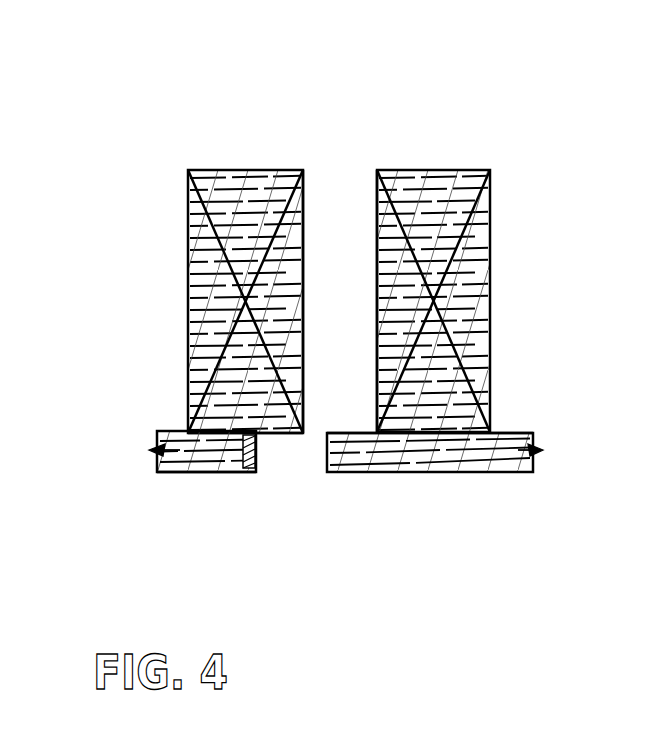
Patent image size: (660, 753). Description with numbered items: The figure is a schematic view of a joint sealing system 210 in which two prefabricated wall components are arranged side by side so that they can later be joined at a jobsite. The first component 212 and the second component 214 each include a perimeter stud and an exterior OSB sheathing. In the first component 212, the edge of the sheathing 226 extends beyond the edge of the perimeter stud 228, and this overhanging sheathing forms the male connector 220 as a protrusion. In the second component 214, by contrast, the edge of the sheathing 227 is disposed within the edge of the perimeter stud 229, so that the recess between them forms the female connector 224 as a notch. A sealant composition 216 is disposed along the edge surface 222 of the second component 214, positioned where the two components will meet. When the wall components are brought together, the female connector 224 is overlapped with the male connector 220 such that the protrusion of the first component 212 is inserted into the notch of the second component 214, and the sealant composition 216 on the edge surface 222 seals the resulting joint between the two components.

The joint sealing system 210 is at (351, 116).
The first component 212 is at (491, 280).
The second component 214 is at (189, 248).
The sealant composition 216 is at (263, 470).
The male connector 220 is at (343, 432).
The edge surface 222 is at (195, 452).
The female connector 224 is at (282, 434).
The sheathing 226 is at (410, 473).
The sheathing 227 is at (192, 474).
The perimeter stud 228 is at (376, 314).
The perimeter stud 229 is at (303, 237).